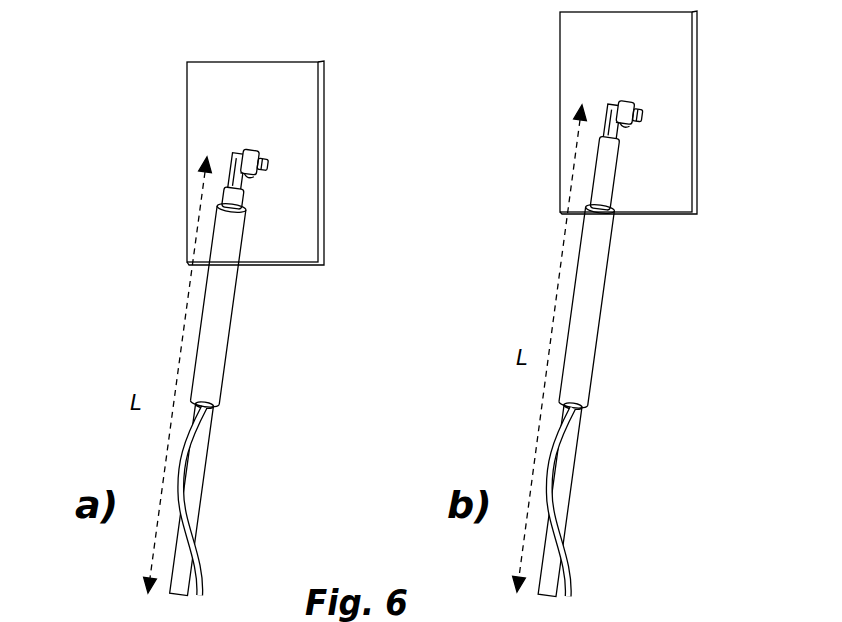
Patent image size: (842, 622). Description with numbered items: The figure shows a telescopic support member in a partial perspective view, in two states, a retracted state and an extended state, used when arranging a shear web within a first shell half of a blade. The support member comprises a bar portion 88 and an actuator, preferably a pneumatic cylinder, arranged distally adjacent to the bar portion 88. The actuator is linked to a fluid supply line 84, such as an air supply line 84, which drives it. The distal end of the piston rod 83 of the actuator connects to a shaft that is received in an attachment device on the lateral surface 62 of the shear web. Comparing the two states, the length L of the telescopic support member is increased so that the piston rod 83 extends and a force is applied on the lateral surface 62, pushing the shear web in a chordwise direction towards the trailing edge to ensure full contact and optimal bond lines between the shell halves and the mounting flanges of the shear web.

The lateral surface 62 is at (281, 110).
The piston rod 83 is at (603, 162).
The fluid supply line 84 is at (568, 583).
The bar portion 88 is at (565, 478).